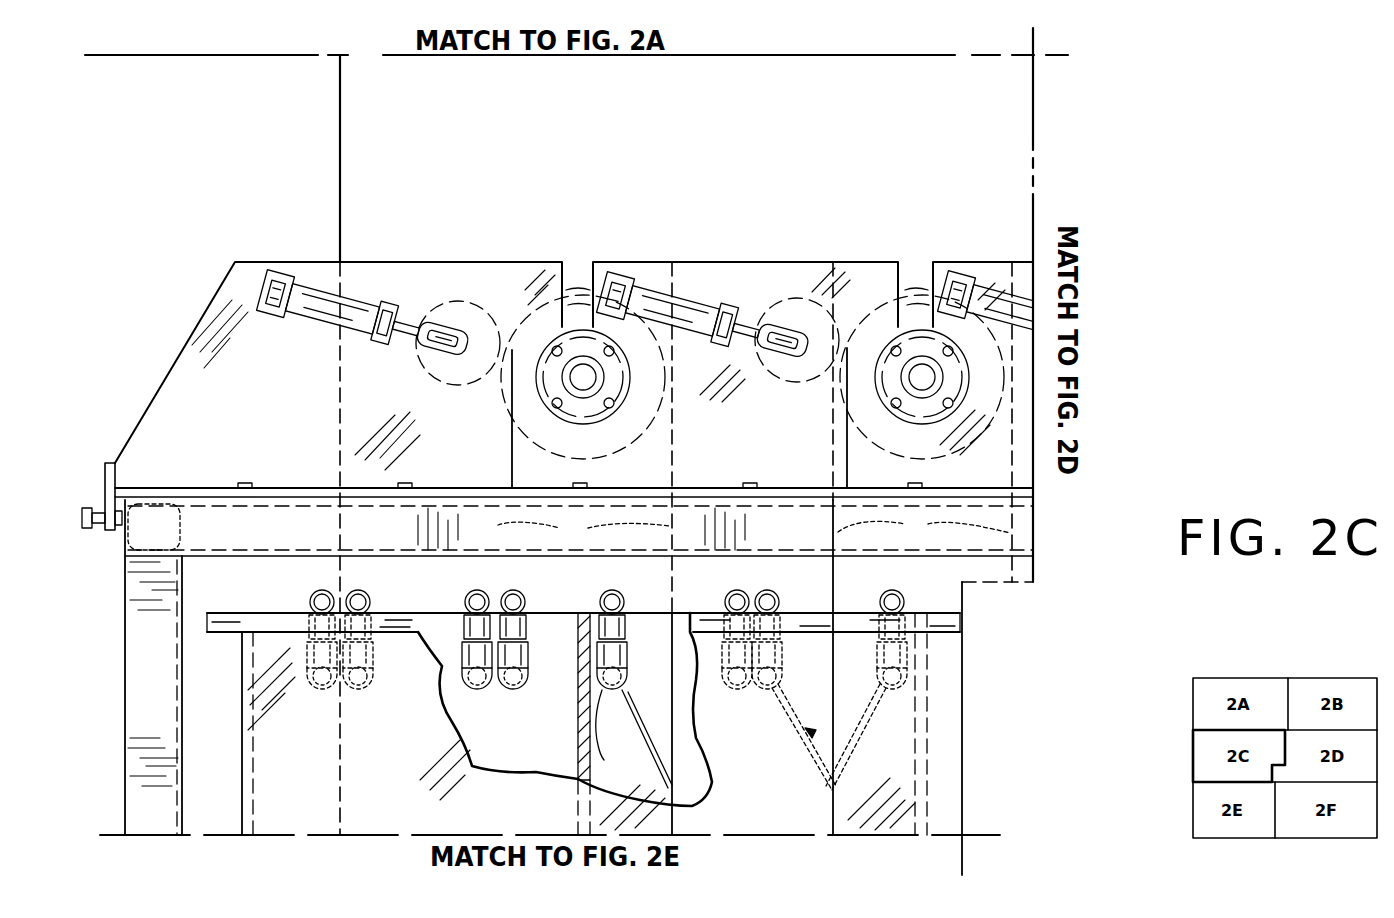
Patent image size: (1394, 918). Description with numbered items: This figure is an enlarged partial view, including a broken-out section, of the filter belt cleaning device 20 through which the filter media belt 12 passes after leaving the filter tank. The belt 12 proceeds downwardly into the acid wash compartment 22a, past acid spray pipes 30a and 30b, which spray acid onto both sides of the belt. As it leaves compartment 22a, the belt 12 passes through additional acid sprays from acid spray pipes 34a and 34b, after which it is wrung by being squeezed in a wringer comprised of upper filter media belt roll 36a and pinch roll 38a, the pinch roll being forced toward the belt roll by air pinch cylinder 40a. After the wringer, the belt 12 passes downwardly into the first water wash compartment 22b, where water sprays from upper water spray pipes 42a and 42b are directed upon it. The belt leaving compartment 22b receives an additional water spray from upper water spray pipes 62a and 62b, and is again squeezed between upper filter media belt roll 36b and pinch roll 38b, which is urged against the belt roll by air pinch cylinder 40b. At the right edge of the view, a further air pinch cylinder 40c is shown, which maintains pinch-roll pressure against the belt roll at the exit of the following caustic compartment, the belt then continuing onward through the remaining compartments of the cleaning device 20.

The filter media belt 12 is at (340, 106).
The filter belt cleaning device 20 is at (190, 274).
The acid wash compartment 22a is at (441, 650).
The first water wash compartment 22b is at (648, 650).
The acid spray pipe 30a is at (316, 690).
The acid spray pipe 30b is at (360, 690).
The acid spray pipe 34a is at (472, 690).
The acid spray pipe 34b is at (513, 690).
The upper filter media belt roll 36a is at (578, 292).
The upper filter media belt roll 36b is at (915, 292).
The pinch roll 38a is at (430, 302).
The pinch roll 38b is at (786, 300).
The air pinch cylinder 40a is at (350, 298).
The air pinch cylinder 40b is at (652, 292).
The air pinch cylinder 40c is at (1005, 288).
The upper water spray pipe 42a is at (634, 689).
The upper water spray pipe 42b is at (730, 688).
The upper water spray pipe 62a is at (772, 690).
The upper water spray pipe 62b is at (898, 690).